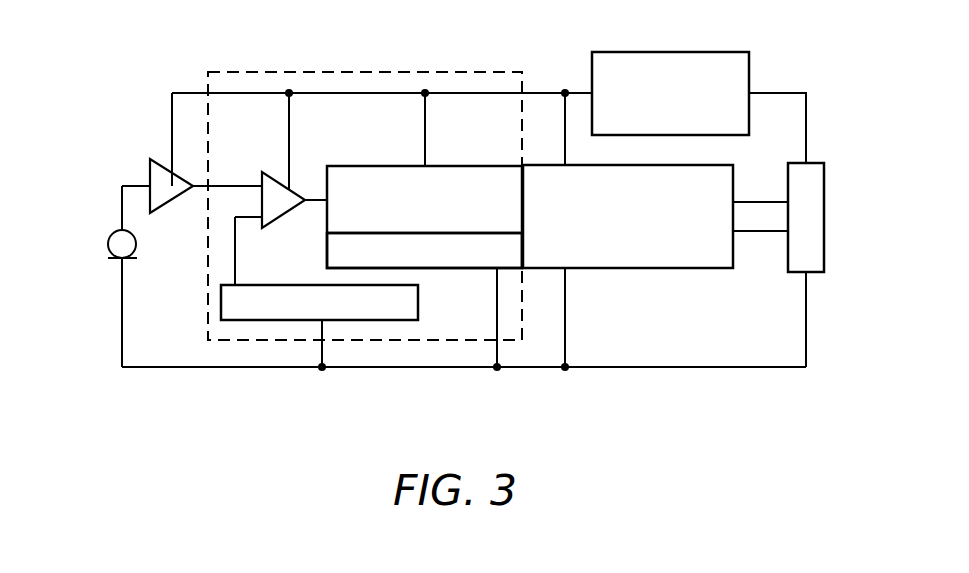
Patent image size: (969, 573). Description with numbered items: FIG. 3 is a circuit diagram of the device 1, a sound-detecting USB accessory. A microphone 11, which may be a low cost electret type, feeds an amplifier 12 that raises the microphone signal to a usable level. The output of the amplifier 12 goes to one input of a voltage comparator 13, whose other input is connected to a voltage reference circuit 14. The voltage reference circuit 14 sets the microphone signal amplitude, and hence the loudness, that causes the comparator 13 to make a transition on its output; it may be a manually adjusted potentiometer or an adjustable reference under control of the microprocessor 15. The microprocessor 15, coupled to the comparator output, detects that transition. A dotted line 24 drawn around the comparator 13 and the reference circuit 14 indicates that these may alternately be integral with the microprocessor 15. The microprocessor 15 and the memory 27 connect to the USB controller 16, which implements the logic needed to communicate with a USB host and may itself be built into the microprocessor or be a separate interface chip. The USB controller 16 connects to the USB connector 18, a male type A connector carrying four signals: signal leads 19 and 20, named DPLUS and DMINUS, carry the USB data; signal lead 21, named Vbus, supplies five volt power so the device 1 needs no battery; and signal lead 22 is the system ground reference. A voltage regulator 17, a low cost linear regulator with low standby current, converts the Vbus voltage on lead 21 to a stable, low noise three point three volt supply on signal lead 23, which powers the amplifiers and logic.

The device 1 is at (62, 88).
The microphone 11 is at (108, 244).
The amplifier 12 is at (150, 170).
The voltage comparator 13 is at (273, 175).
The voltage reference circuit 14 is at (273, 320).
The microprocessor 15 is at (397, 166).
The USB controller 16 is at (630, 268).
The voltage regulator 17 is at (620, 52).
The USB connector 18 is at (825, 217).
The signal lead 19 is at (762, 200).
The signal lead 20 is at (762, 232).
The signal lead 21 is at (777, 93).
The signal lead 22 is at (750, 367).
The signal lead 23 is at (172, 120).
The dotted line 24 is at (440, 340).
The memory 27 is at (478, 268).